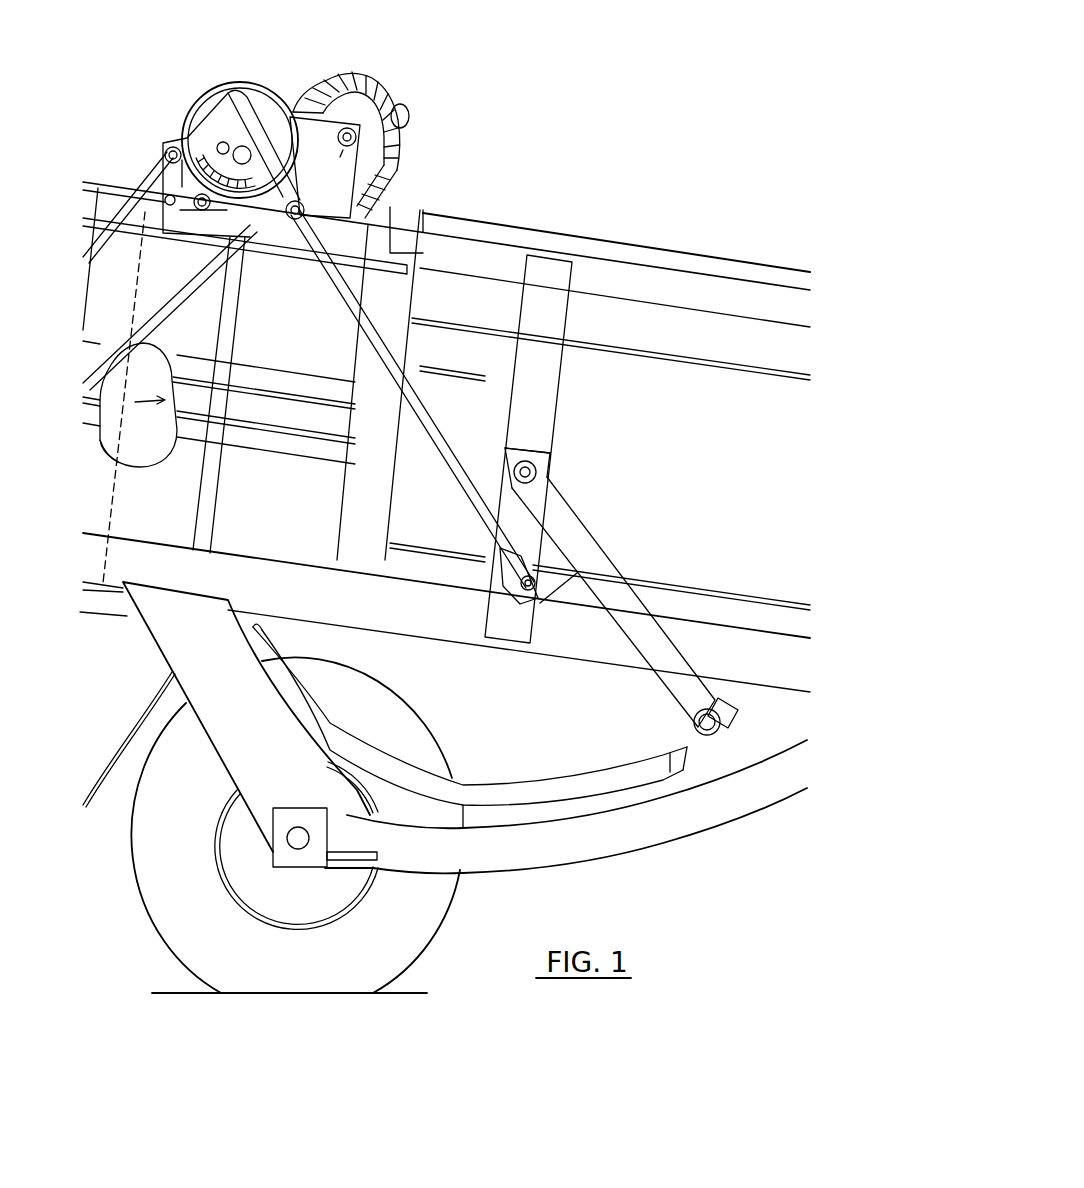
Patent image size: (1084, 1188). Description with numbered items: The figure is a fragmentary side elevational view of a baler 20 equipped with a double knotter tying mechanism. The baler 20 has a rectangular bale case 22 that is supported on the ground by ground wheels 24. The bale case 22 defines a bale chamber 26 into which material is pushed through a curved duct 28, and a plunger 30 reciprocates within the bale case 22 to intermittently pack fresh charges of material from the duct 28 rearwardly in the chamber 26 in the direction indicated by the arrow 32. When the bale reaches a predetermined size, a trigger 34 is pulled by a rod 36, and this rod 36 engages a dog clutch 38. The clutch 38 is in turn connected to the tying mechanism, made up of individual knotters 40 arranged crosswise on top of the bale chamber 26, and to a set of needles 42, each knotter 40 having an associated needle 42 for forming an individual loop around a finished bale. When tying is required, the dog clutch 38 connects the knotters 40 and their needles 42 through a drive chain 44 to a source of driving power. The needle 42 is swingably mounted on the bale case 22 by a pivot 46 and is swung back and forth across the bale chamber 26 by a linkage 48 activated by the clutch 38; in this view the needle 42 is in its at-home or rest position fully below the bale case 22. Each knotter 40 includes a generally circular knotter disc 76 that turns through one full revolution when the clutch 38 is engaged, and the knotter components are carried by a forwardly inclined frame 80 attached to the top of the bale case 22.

The baler 20 is at (507, 196).
The bale case 22 is at (672, 280).
The ground wheels 24 is at (432, 923).
The bale chamber 26 is at (157, 358).
The curved duct 28 is at (101, 768).
The plunger 30 is at (113, 450).
The arrow 32 is at (134, 403).
The trigger 34 is at (160, 176).
The rod 36 is at (275, 250).
The dog clutch 38 is at (238, 90).
The knotter 40 is at (385, 98).
The needle 42 is at (512, 764).
The drive chain 44 is at (185, 140).
The pivot 46 is at (546, 470).
The linkage 48 is at (426, 408).
The knotter disc 76 is at (408, 116).
The frame 80 is at (378, 183).